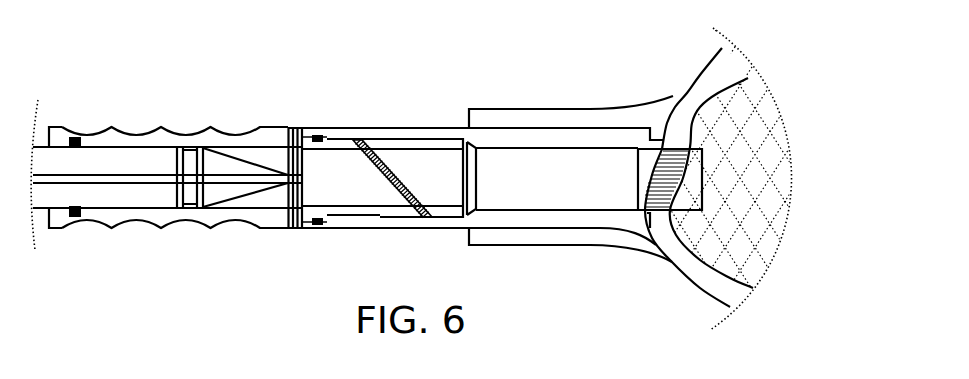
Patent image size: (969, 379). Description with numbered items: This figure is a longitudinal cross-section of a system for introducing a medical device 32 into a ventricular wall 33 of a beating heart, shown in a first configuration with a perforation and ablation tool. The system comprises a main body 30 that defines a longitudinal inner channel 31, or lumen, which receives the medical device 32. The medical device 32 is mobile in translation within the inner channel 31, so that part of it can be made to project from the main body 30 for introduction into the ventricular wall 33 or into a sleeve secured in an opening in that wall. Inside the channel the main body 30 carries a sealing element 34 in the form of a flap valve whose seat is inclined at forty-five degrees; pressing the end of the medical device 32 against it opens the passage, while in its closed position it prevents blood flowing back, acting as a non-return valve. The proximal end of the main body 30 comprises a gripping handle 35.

The main body 30 is at (333, 127).
The inner channel 31 is at (527, 190).
The medical device 32 is at (113, 195).
The ventricular wall 33 is at (700, 85).
The sealing element 34 is at (377, 158).
The gripping handle 35 is at (114, 128).